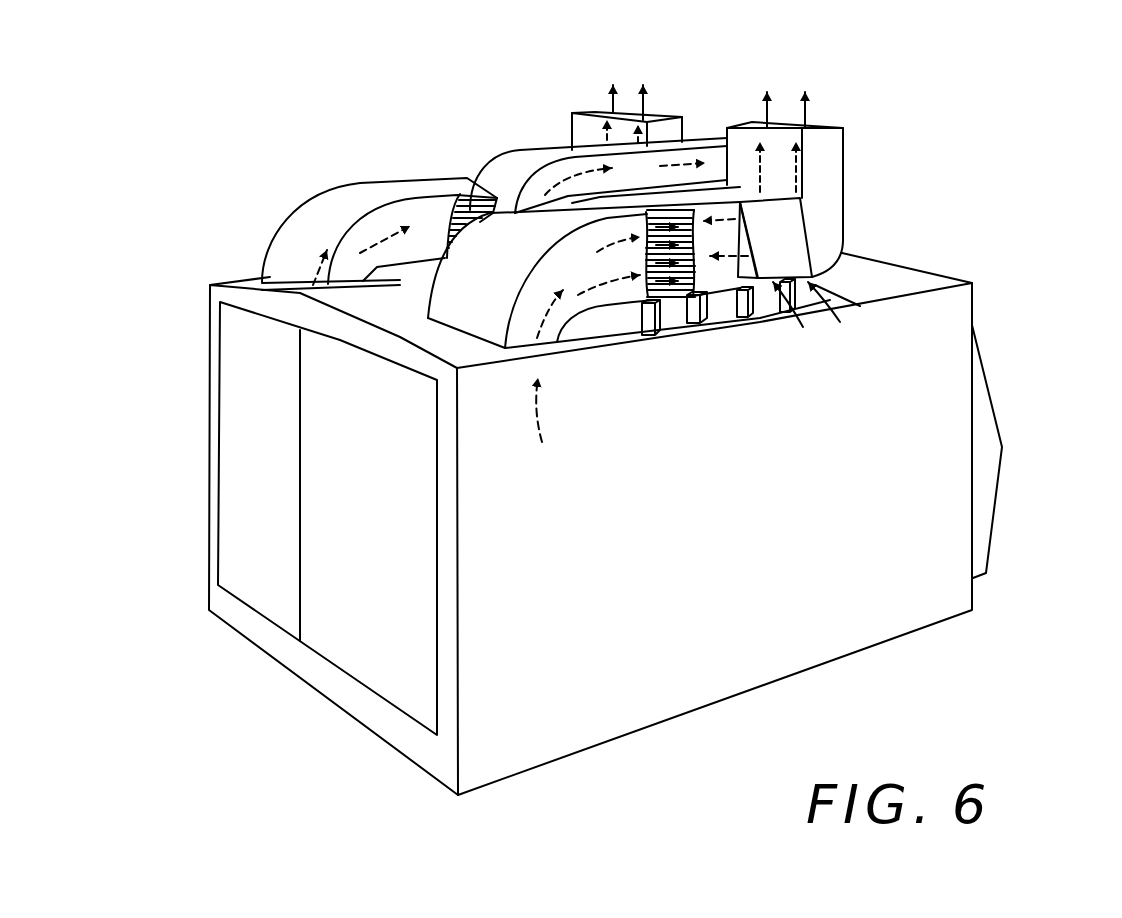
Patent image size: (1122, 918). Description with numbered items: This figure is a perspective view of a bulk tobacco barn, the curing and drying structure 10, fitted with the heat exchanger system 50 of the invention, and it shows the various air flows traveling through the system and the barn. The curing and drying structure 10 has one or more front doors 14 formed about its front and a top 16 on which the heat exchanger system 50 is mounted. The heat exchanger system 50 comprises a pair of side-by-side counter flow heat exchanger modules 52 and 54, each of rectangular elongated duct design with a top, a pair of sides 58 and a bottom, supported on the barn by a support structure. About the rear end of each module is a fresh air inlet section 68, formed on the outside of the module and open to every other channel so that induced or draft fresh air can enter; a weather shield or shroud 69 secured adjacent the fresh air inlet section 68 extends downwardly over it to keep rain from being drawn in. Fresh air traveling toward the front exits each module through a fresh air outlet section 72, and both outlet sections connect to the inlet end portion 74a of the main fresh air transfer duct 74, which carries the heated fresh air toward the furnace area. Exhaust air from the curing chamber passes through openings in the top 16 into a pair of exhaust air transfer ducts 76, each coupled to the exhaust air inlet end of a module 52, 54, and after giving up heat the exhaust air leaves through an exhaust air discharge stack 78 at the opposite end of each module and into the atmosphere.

The curing and drying structure 10 is at (1022, 187).
The front doors 14 is at (267, 523).
The top 16 is at (370, 313).
The heat exchanger system 50 is at (768, 69).
The heat exchanger module 52 is at (785, 258).
The heat exchanger module 54 is at (400, 193).
The sides 58 is at (365, 226).
The fresh air inlet section 68 is at (832, 232).
The weather shield or shroud 69 is at (850, 288).
The fresh air outlet section 72 is at (473, 213).
The main fresh air transfer duct 74 is at (711, 126).
The inlet end portion 74a is at (520, 167).
The exhaust air transfer duct 76 is at (337, 203).
The exhaust air discharge stack 78 is at (825, 177).